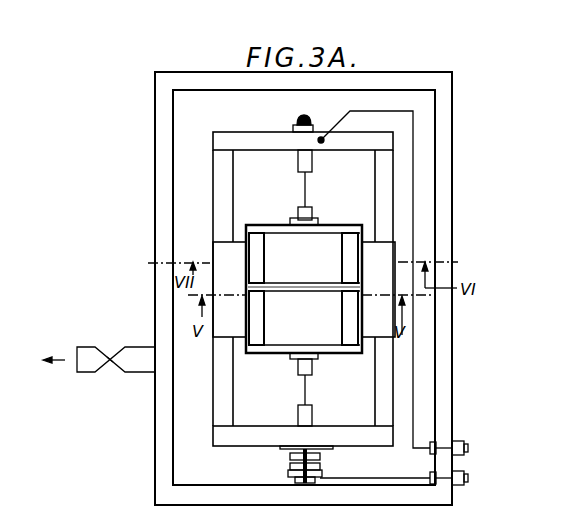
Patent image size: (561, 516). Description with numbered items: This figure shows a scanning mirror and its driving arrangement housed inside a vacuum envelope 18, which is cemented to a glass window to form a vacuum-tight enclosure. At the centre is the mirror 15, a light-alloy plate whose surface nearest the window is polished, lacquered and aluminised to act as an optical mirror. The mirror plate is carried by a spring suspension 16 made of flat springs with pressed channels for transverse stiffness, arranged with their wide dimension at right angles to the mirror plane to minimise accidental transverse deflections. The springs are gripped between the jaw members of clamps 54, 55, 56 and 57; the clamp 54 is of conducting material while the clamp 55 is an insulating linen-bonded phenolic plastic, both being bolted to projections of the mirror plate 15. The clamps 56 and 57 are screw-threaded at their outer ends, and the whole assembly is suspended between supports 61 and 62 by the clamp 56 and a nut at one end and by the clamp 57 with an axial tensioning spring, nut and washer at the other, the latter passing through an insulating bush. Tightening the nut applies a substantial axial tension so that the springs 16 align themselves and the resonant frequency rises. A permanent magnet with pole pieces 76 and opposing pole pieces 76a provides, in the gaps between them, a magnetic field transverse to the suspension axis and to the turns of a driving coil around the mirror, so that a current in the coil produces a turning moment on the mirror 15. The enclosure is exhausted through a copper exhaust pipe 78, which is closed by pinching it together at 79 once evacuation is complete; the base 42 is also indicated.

The mirror 15 is at (323, 243).
The spring suspension 16 is at (306, 186).
The vacuum envelope 18 is at (442, 374).
The base 42 is at (431, 513).
The clamp 54 is at (298, 215).
The clamp 55 is at (298, 371).
The clamp 56 is at (298, 164).
The clamp 57 is at (298, 419).
The support 61 is at (224, 138).
The support 62 is at (266, 437).
The pole pieces 76 is at (380, 260).
The pole pieces 76a is at (368, 238).
The copper exhaust pipe 78 is at (144, 353).
The pinched closure 79 is at (113, 358).